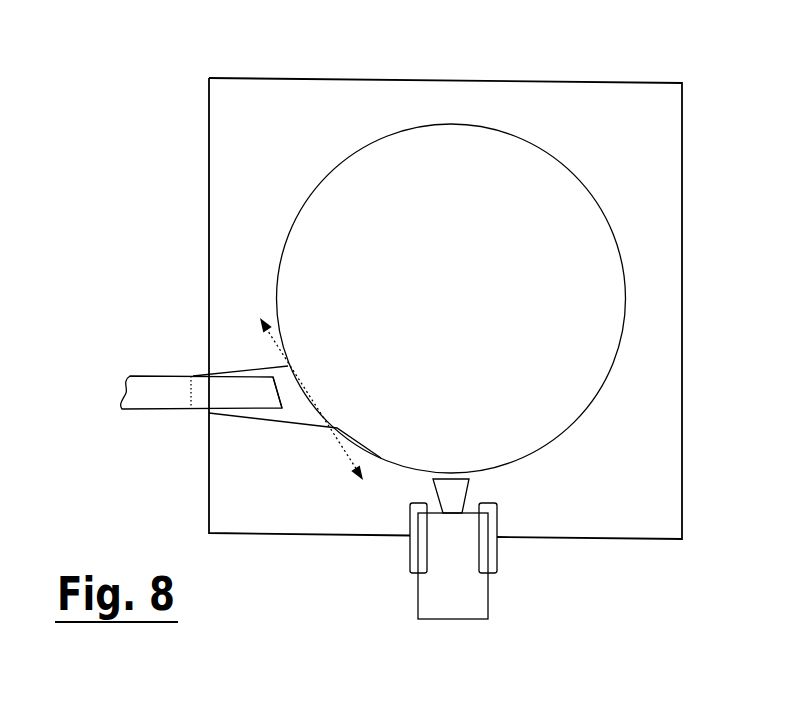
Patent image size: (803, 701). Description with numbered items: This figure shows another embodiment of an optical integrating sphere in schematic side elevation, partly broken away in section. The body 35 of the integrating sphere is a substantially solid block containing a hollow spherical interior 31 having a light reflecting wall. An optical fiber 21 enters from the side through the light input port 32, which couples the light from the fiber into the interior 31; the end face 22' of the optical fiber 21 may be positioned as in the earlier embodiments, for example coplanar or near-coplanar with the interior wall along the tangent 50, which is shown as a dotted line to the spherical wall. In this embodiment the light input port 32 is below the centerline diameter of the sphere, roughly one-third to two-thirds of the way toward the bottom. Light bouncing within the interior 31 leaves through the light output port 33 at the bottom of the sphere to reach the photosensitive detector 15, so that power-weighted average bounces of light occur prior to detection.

The body 35 is at (313, 79).
The interior 31 is at (372, 234).
The light input port 32 is at (243, 368).
The optical fiber 21 is at (158, 376).
The end face 22' is at (308, 384).
The tangent 50 is at (353, 458).
The light output port 33 is at (450, 492).
The photosensitive detector 15 is at (433, 588).